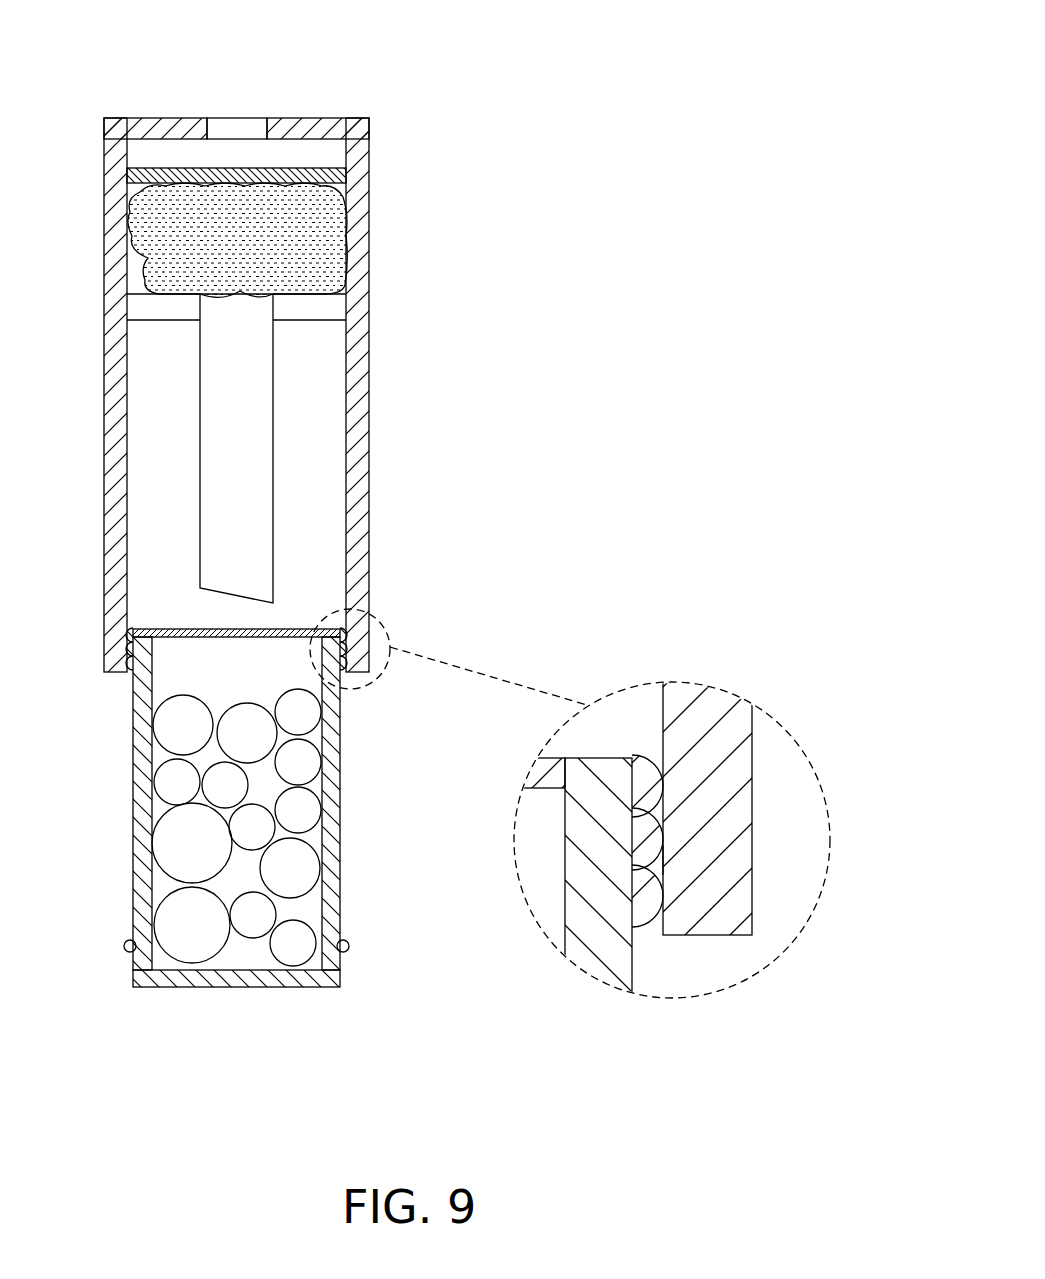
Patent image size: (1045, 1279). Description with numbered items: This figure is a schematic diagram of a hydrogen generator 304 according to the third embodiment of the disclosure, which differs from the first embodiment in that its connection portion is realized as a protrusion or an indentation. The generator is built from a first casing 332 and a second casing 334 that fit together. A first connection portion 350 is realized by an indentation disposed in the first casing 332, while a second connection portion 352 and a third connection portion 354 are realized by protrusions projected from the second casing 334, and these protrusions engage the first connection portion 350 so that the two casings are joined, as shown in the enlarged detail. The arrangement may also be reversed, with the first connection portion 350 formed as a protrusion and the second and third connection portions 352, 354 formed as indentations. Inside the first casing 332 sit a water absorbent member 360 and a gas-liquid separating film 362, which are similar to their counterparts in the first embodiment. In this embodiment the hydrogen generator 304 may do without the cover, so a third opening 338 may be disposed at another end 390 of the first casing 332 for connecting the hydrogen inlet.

The hydrogen generator 304 is at (783, 76).
The another end of the first casing 390 is at (161, 98).
The third opening 338 is at (238, 113).
The gas-liquid separating film 362 is at (335, 173).
The water absorbent member 360 is at (338, 229).
The first casing 332 is at (343, 350).
The second casing 334 is at (327, 780).
The third connection portion 354 is at (346, 946).
The second connection portion 352 is at (648, 832).
The first connection portion 350 is at (666, 860).